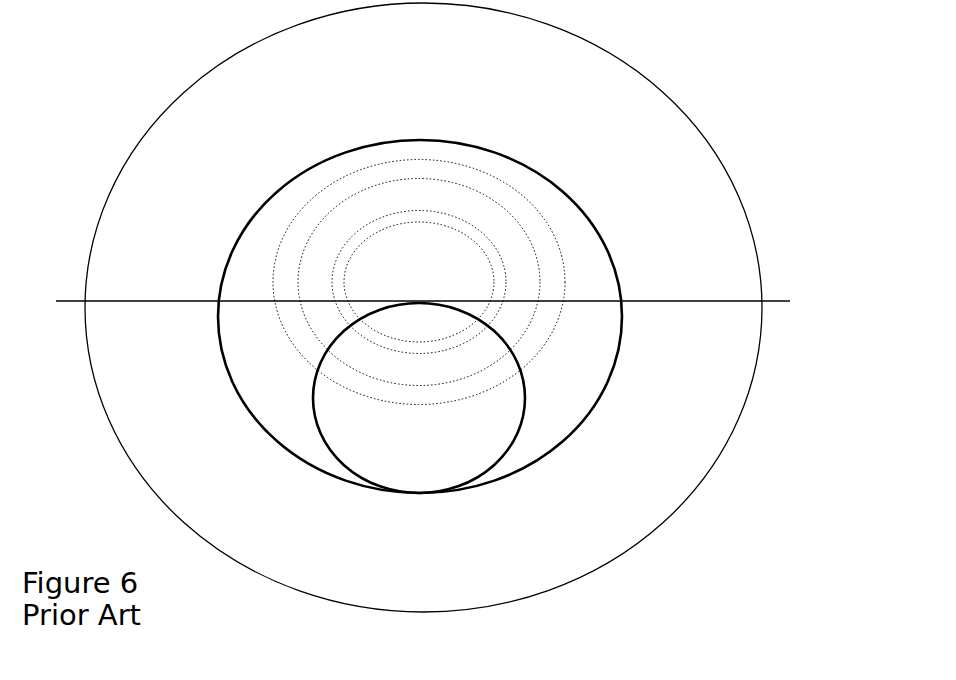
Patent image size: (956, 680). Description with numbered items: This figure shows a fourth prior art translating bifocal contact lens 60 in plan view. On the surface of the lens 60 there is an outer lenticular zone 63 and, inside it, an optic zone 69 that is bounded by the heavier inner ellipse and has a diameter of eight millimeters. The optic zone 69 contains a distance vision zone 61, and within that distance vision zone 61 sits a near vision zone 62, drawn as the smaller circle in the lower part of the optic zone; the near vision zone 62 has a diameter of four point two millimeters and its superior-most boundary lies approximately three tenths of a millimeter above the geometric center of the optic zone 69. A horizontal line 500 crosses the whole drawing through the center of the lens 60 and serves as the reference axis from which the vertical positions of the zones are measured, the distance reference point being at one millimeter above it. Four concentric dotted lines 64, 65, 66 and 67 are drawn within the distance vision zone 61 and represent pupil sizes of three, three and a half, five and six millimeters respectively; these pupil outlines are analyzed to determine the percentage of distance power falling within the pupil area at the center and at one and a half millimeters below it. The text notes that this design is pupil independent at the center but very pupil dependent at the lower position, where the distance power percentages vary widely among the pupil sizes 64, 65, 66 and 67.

The lens 60 is at (728, 476).
The distance vision zone 61 is at (420, 316).
The near vision zone 62 is at (419, 398).
The lenticular zone 63 is at (423, 307).
The dotted line for 3.0 mm pupil 64 is at (470, 232).
The dotted line for 3.5 mm pupil 65 is at (492, 232).
The dotted line for 5.0 mm pupil 66 is at (537, 230).
The dotted line for 6.0 mm pupil 67 is at (572, 267).
The optic zone 69 is at (623, 280).
The horizontal axis line 500 is at (781, 306).